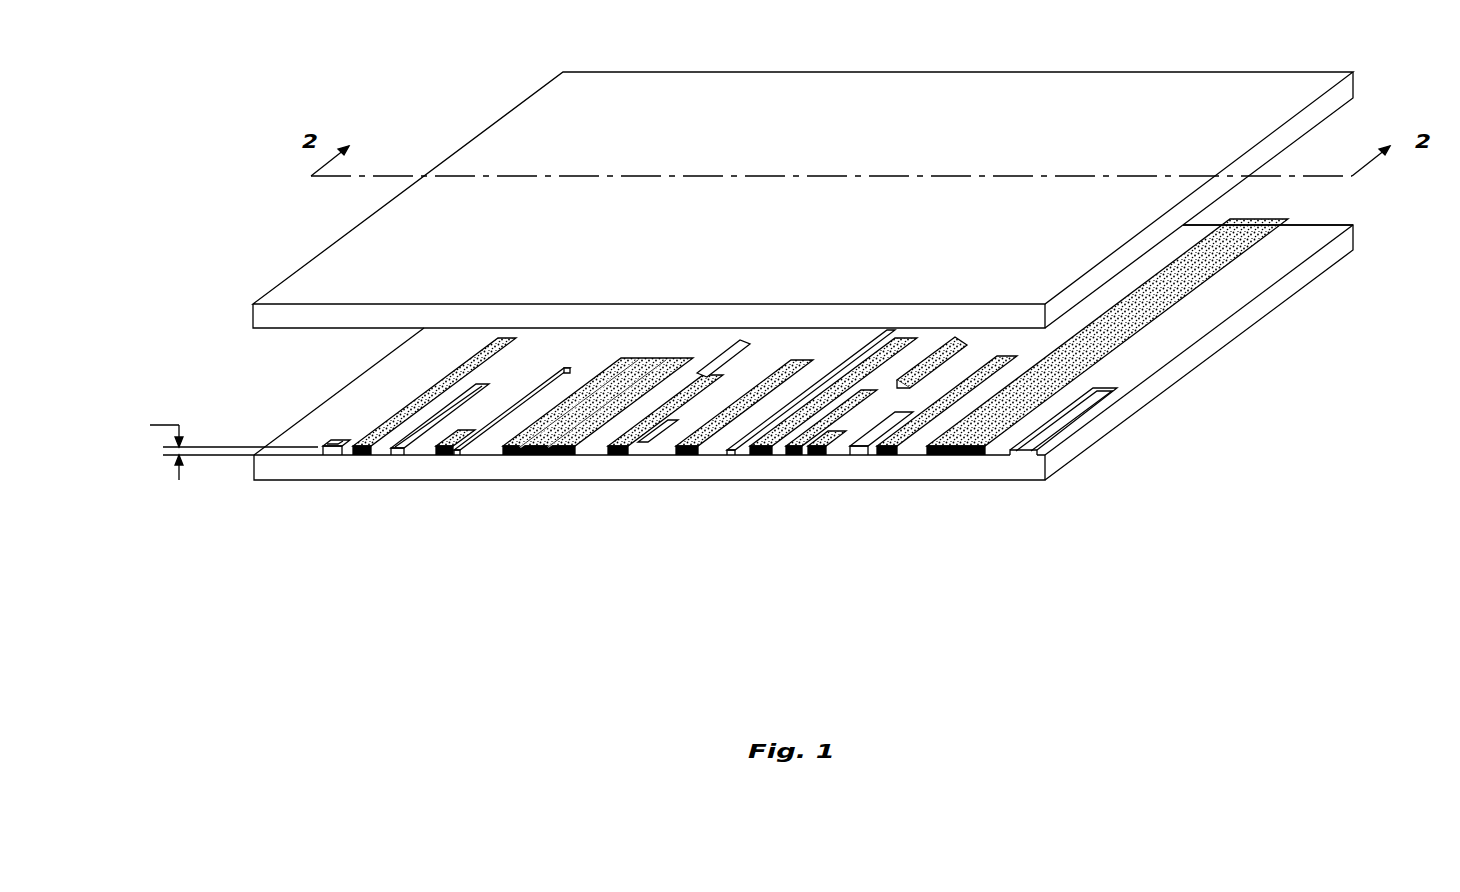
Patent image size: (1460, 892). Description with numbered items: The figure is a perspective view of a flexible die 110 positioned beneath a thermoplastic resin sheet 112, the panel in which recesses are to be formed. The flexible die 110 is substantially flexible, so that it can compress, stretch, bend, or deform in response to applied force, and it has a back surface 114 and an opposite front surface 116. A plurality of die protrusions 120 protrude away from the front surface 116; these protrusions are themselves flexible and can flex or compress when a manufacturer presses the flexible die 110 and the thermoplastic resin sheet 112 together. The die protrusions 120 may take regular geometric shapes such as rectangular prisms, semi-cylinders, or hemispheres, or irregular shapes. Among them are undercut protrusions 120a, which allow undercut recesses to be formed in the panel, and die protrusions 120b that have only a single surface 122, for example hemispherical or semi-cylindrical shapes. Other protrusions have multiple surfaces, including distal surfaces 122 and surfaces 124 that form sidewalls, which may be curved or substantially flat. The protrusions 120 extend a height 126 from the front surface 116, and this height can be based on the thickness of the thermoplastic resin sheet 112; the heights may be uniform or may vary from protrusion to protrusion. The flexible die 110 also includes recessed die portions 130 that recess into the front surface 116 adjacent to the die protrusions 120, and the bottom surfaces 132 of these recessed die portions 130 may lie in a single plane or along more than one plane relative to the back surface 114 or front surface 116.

The flexible die 110 is at (987, 470).
The thermoplastic resin sheet 112 is at (332, 277).
The back surface 114 is at (298, 480).
The front surface 116 is at (1320, 230).
The die protrusions 120 is at (513, 440).
The undercut protrusions 120a is at (345, 456).
The die protrusions having a single surface 120b is at (700, 458).
The distal surface 122 is at (1033, 388).
The sidewalls 124 is at (614, 458).
The height 126 is at (207, 448).
The recessed die portions 130 is at (474, 438).
The bottom surfaces 132 is at (455, 460).